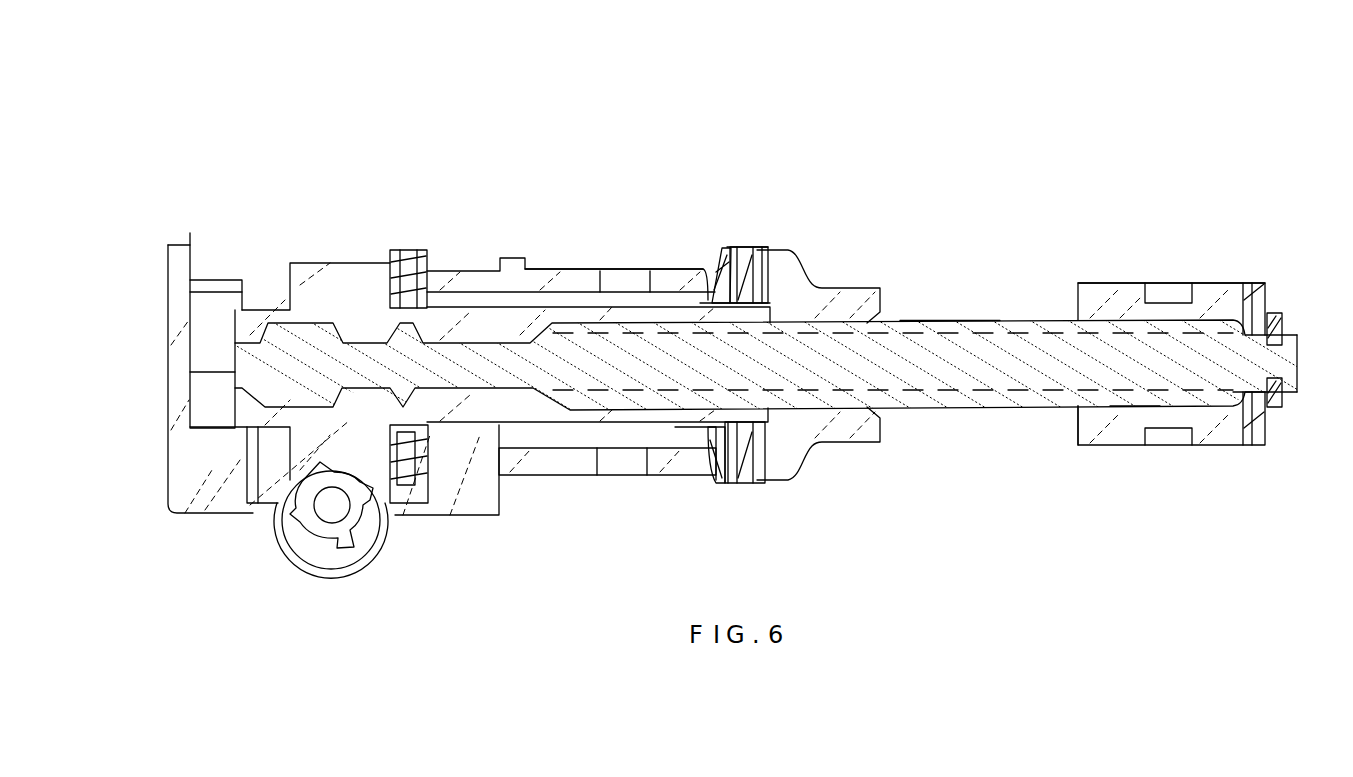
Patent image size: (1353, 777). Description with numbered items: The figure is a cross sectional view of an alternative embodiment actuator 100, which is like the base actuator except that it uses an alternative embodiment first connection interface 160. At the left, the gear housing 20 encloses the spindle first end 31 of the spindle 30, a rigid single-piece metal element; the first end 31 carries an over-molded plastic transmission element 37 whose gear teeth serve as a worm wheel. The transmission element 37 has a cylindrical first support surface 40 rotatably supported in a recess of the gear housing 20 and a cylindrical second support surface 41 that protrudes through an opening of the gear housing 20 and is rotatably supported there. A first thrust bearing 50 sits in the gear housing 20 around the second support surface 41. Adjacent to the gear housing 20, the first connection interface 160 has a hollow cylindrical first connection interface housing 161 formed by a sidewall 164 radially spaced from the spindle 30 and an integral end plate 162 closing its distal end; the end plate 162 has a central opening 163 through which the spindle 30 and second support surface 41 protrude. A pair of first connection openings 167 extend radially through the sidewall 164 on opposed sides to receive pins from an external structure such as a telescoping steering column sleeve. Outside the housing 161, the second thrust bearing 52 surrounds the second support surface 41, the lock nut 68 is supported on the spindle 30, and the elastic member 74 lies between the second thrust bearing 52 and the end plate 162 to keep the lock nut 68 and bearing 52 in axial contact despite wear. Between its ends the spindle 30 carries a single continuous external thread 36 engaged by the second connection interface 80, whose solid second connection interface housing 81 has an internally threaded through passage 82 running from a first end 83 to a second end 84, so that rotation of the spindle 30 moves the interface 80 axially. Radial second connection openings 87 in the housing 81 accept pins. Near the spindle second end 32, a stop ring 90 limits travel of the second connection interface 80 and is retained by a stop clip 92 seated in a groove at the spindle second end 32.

The alternative embodiment actuator 100 is at (428, 91).
The gear housing 20 is at (182, 256).
The spindle first end 31 is at (235, 381).
The transmission element 37 is at (340, 270).
The second support surface 41 is at (497, 516).
The first support surface 40 is at (252, 478).
The first thrust bearing 50 is at (410, 250).
The alternative embodiment first connection interface 160 is at (556, 268).
The first connection interface housing 161 is at (614, 220).
The sidewall 164 is at (578, 463).
The first connection openings 167 is at (636, 270).
The elastic member 74 is at (718, 245).
The second thrust bearing 52 is at (752, 247).
The end plate 162 is at (708, 460).
The central opening 163 is at (722, 430).
The lock nut 68 is at (824, 290).
The spindle 30 is at (1017, 353).
The external thread 36 is at (940, 332).
The second connection interface 80 is at (1095, 295).
The second connection interface housing 81 is at (1171, 249).
The second connection openings 87 is at (1158, 292).
The second end of the second connection interface housing 84 is at (1250, 307).
The stop ring 90 is at (1238, 404).
The stop clip 92 is at (1275, 410).
The spindle second end 32 is at (1297, 335).
The first end of the second connection interface housing 83 is at (1082, 422).
The through passage 82 is at (1148, 395).